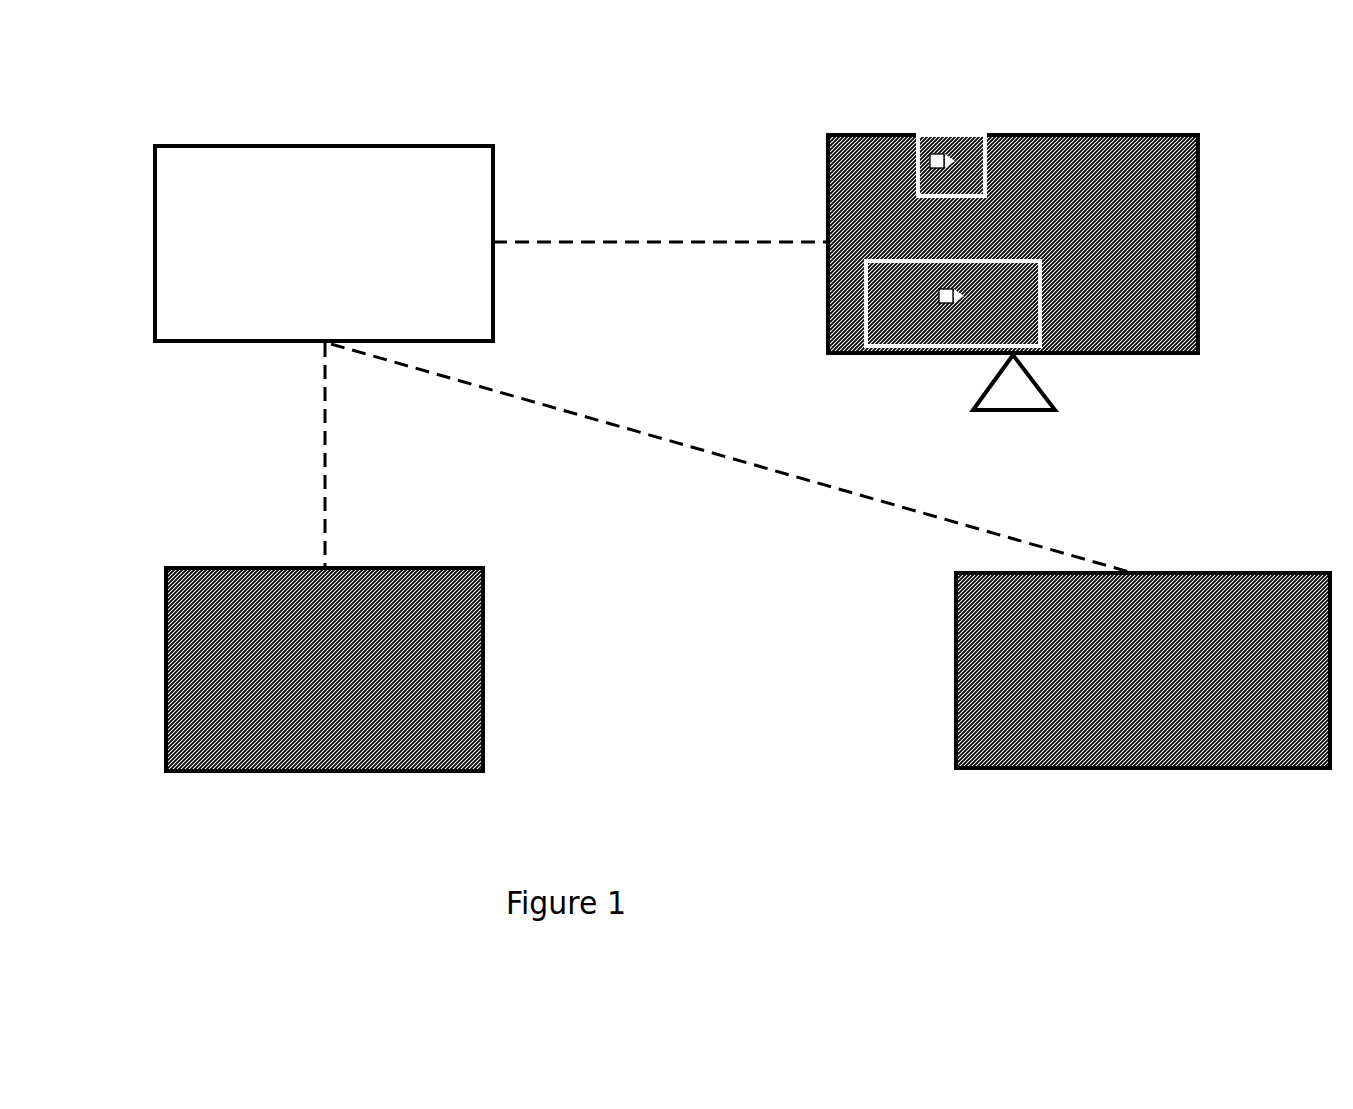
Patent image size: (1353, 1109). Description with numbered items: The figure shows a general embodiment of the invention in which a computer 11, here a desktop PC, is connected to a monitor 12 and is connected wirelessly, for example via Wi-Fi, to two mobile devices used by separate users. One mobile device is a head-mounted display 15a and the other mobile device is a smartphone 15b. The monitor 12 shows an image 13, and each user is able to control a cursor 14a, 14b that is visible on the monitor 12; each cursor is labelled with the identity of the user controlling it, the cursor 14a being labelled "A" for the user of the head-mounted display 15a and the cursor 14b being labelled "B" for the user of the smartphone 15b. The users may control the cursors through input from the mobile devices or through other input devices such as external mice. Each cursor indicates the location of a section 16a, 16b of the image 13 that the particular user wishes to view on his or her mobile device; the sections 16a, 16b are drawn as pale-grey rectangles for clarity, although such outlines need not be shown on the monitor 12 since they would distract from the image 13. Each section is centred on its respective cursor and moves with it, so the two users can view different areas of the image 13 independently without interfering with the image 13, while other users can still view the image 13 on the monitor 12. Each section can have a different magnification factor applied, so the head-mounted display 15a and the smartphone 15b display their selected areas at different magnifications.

The computer 11 is at (322, 137).
The monitor 12 is at (1082, 350).
The image 13 is at (1100, 205).
The cursor 14a is at (925, 150).
The cursor 14b is at (930, 296).
The head-mounted display 15a is at (323, 760).
The smartphone 15b is at (1130, 757).
The section 16a is at (940, 128).
The section 16b is at (1030, 292).